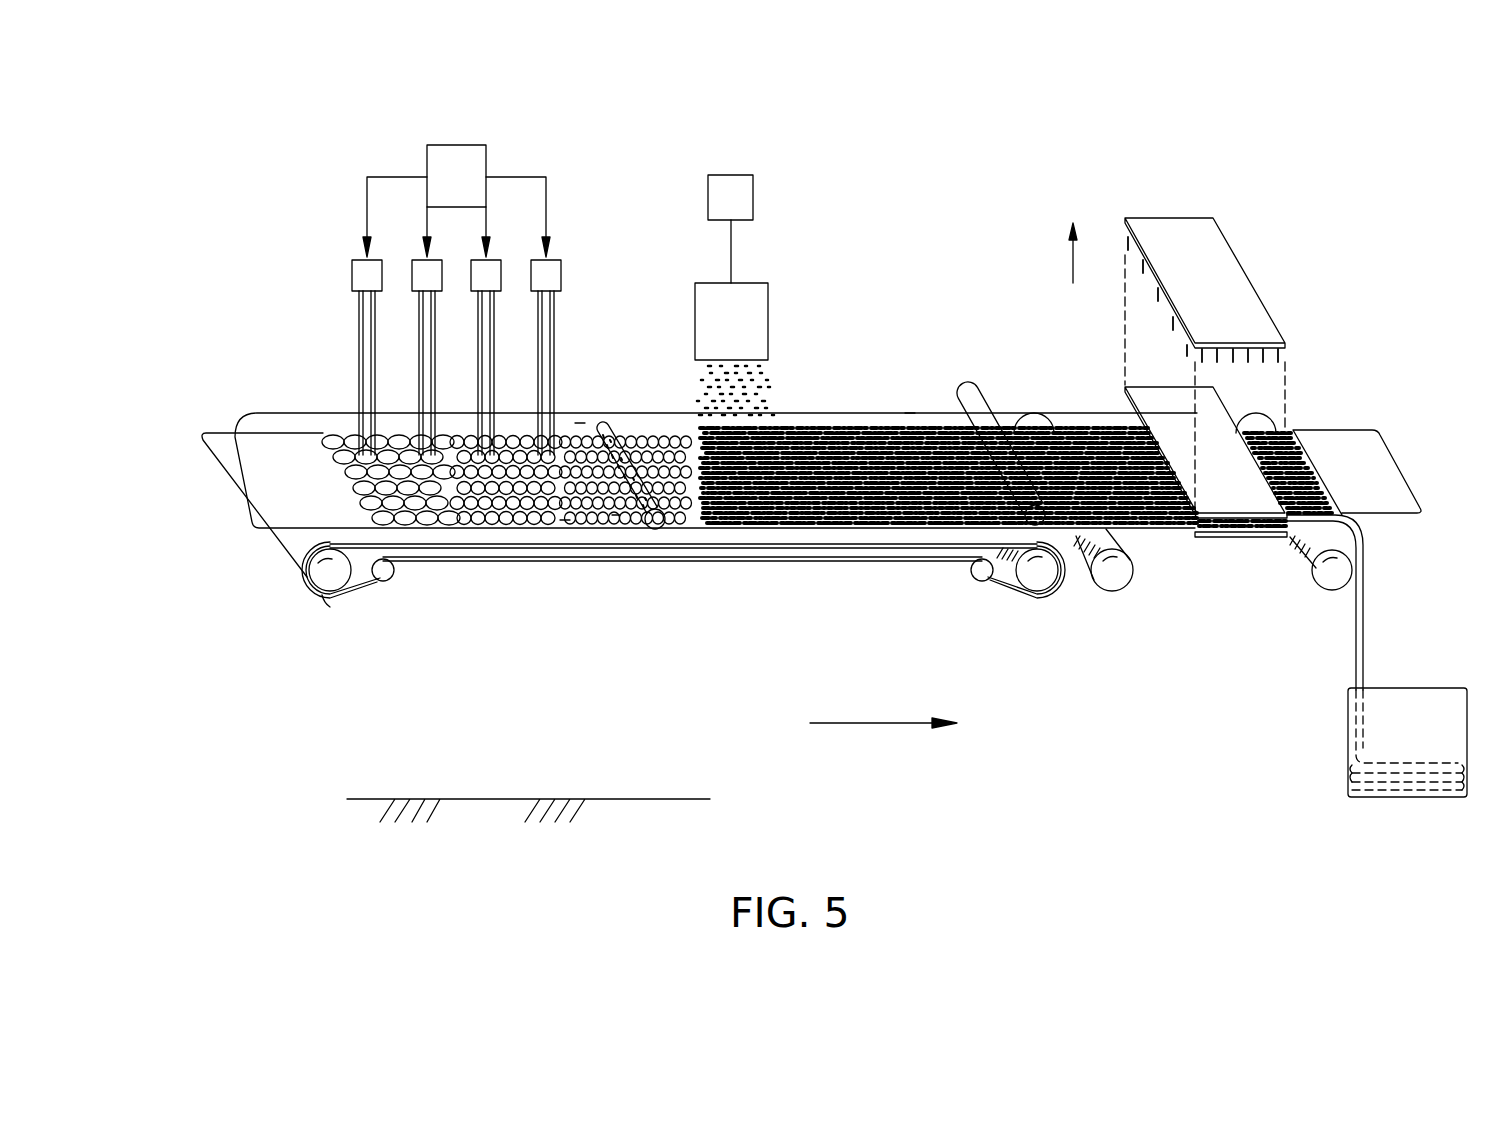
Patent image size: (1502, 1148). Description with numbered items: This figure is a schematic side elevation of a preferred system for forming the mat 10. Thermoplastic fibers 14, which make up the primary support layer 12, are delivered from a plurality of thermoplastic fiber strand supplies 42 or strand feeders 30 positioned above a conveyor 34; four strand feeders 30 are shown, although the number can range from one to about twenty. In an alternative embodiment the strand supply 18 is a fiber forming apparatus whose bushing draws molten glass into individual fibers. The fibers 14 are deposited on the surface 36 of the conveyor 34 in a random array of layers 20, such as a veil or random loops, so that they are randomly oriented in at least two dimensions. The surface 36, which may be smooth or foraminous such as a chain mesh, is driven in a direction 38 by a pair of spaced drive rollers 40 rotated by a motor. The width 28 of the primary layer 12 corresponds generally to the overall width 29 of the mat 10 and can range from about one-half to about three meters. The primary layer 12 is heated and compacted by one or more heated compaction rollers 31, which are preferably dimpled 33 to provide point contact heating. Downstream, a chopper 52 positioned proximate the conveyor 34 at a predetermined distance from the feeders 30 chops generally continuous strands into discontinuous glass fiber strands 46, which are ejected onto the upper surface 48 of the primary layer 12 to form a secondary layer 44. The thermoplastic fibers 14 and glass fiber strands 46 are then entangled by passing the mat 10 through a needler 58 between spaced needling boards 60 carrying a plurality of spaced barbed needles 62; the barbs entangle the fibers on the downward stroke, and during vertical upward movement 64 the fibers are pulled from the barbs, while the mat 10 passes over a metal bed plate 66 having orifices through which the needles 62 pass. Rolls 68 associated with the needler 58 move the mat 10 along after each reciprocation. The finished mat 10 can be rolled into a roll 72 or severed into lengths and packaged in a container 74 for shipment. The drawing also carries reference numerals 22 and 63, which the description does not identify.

The mat 10 is at (1297, 423).
The primary support layer 12 is at (580, 423).
The thermoplastic fibers 14 is at (546, 207).
The strand supply 18 is at (315, 423).
The random array of layers 20 is at (440, 527).
The foam layer 22 is at (568, 528).
The width of the primary layer 28 is at (223, 481).
The overall width of the mat 29 is at (1403, 470).
The strand feeders 30 is at (353, 260).
The heated compaction rollers 31 is at (607, 420).
The dimples 33 is at (617, 517).
The conveyor 34 is at (910, 413).
The surface of the conveyor 36 is at (895, 417).
The direction 38 is at (870, 723).
The drive rollers 40 is at (1043, 590).
The thermoplastic fiber strand supplies 42 is at (453, 145).
The secondary layer 44 is at (913, 530).
The glass fiber strands 46 is at (787, 417).
The upper surface of the primary layer 48 is at (673, 523).
The chopper 52 is at (768, 305).
The needler 58 is at (1278, 538).
The needling boards 60 is at (1125, 398).
The needles 62 is at (1280, 362).
The ground 63 is at (393, 799).
The vertical upward movement 64 is at (1070, 255).
The metal bed plate 66 is at (1212, 538).
The rolls 68 is at (1333, 593).
The roll 72 is at (1323, 480).
The container 74 is at (1467, 708).